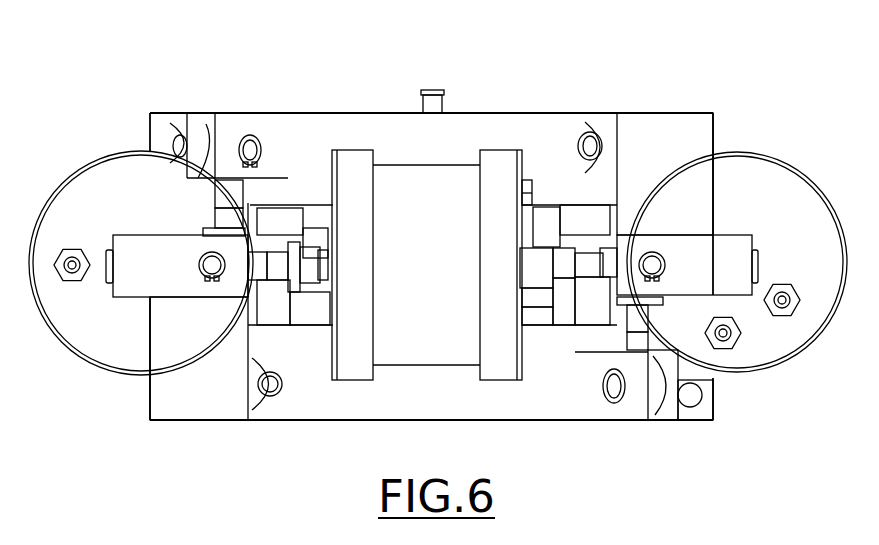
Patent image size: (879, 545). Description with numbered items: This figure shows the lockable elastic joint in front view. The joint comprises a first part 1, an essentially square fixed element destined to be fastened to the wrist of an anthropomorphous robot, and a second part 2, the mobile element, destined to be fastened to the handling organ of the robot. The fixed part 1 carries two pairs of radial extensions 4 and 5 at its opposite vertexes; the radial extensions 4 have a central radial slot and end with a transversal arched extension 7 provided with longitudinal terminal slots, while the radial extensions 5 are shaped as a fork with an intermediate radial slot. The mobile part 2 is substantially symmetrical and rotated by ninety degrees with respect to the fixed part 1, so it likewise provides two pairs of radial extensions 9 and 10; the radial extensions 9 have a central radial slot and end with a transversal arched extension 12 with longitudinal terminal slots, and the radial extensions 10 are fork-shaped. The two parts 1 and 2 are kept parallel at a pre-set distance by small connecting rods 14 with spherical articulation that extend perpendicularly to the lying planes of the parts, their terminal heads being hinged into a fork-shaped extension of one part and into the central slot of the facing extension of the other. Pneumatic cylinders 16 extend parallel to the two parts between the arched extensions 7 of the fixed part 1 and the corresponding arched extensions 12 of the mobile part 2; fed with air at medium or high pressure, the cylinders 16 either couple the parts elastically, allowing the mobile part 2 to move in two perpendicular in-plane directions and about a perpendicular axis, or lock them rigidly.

The first part 1 is at (505, 420).
The second part 2 is at (497, 113).
The radial extensions 4 is at (182, 407).
The radial extensions 5 is at (663, 410).
The transversal arched extension 7 is at (135, 285).
The radial extensions 9 is at (662, 120).
The radial extensions 10 is at (230, 118).
The transversal arched extension 12 is at (675, 250).
The small connecting rods 14 is at (225, 210).
The pneumatic cylinders 16 is at (95, 185).